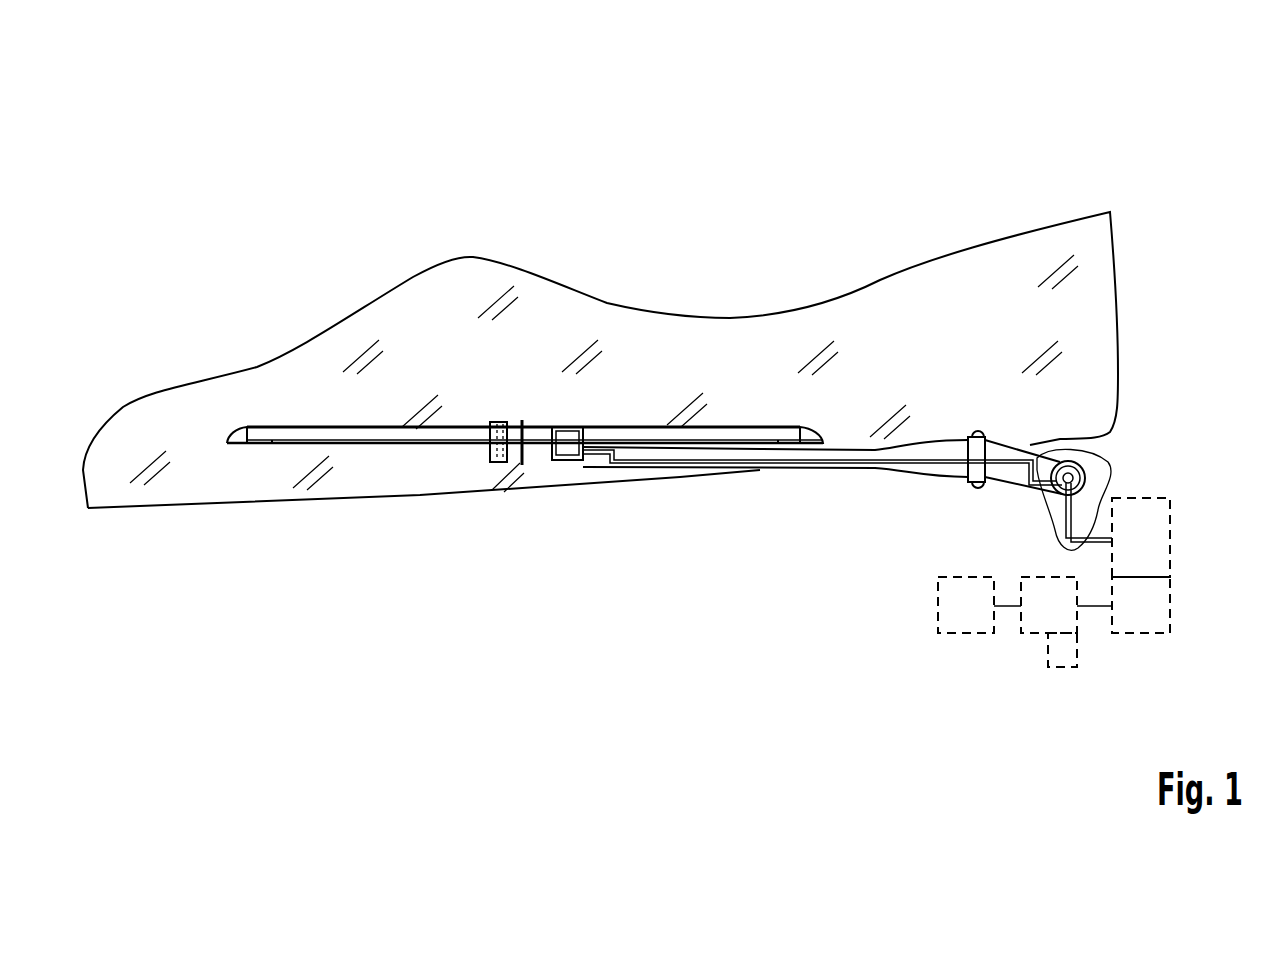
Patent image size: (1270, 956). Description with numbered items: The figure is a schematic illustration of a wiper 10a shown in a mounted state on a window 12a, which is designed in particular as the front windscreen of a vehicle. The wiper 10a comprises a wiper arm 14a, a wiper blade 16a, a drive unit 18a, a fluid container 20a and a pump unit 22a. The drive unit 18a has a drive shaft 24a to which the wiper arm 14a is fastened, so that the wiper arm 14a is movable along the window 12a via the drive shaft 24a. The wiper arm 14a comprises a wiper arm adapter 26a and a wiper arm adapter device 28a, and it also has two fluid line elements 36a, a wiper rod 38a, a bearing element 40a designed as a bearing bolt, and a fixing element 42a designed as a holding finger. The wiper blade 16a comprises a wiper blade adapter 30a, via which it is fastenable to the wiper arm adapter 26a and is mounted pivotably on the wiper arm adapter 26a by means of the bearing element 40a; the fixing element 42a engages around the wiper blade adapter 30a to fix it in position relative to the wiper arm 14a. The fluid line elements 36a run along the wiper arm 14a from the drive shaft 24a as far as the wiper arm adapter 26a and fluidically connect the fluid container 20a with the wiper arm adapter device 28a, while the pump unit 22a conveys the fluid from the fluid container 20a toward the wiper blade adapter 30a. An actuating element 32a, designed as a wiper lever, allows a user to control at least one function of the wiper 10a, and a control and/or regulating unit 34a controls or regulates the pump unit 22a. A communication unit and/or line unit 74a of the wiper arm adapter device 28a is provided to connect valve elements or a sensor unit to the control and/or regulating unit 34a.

The wiper 10a is at (1128, 133).
The window 12a is at (1090, 303).
The wiper arm 14a is at (851, 428).
The wiper blade 16a is at (281, 425).
The drive unit 18a is at (1117, 444).
The fluid container 20a is at (1168, 528).
The pump unit 22a is at (1162, 612).
The drive shaft 24a is at (1088, 470).
The wiper arm adapter 26a is at (583, 464).
The wiper arm adapter device 28a is at (559, 452).
The wiper blade adapter 30a is at (500, 410).
The actuating element 32a is at (1062, 656).
The control and/or regulating unit 34a is at (1030, 620).
The fluid line elements 36a is at (948, 462).
The wiper rod 38a is at (714, 455).
The bearing element 40a is at (485, 463).
The fixing element 42a is at (518, 424).
The communication unit and/or line unit 74a is at (953, 620).